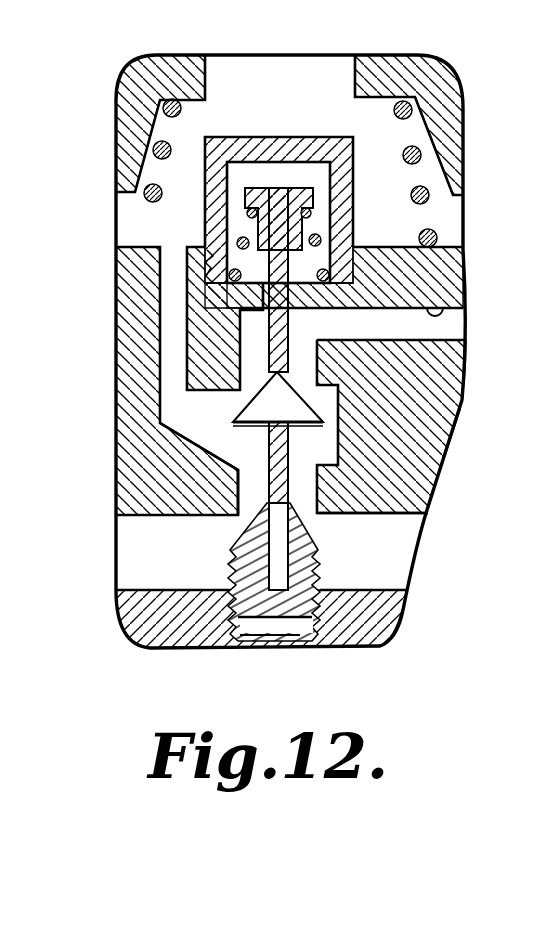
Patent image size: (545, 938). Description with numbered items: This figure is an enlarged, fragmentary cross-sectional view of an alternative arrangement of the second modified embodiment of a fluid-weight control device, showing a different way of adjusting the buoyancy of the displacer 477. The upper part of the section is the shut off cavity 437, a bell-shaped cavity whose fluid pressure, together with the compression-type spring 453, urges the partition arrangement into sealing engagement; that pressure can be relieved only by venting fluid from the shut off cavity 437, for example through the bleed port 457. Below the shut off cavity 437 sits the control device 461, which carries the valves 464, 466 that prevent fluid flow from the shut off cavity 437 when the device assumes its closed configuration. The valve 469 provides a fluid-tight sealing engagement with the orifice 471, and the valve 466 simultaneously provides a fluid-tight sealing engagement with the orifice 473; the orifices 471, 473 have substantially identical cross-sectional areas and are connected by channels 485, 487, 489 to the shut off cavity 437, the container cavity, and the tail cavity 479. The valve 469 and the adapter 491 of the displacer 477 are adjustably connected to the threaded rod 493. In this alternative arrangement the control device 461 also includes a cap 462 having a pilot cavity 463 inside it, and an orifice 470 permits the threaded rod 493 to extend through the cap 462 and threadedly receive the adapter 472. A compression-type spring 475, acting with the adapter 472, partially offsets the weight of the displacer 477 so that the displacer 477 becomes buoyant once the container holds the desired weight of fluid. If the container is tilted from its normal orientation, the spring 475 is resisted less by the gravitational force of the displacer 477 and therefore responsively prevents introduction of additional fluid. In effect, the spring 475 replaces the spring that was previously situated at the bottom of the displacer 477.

The shut off cavity 437 is at (290, 88).
The compression-type spring 453 is at (440, 236).
The bleed port 457 is at (204, 272).
The control device 461 is at (497, 277).
The cap 462 is at (263, 136).
The pilot cavity 463 is at (320, 170).
The valve 464 is at (230, 403).
The valve 466 is at (104, 548).
The valve 469 is at (307, 407).
The orifice 470 is at (290, 315).
The orifice 471 is at (316, 362).
The adapter 472 is at (305, 192).
The orifice 473 is at (308, 514).
The compression-type spring 475 is at (322, 238).
The displacer 477 is at (263, 648).
The tail cavity 479 is at (400, 562).
The channel 485 is at (163, 364).
The channel 487 is at (446, 304).
The channel 489 is at (253, 497).
The adapter 491 is at (322, 600).
The threaded rod 493 is at (288, 450).